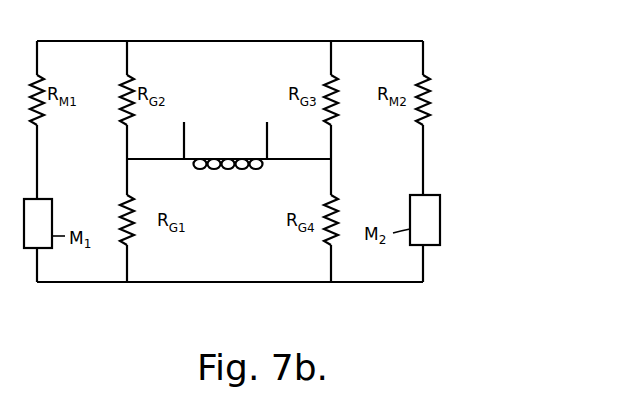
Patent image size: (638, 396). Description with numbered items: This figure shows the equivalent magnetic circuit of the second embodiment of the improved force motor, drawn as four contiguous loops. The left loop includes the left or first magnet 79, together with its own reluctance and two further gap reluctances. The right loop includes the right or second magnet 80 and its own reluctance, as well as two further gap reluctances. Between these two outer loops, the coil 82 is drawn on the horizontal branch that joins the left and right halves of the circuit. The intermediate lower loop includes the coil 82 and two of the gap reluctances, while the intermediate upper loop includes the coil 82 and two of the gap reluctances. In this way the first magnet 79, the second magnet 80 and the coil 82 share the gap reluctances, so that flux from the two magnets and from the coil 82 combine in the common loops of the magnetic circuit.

The first magnet 79 is at (52, 210).
The second magnet 80 is at (410, 205).
The coil 82 is at (241, 157).